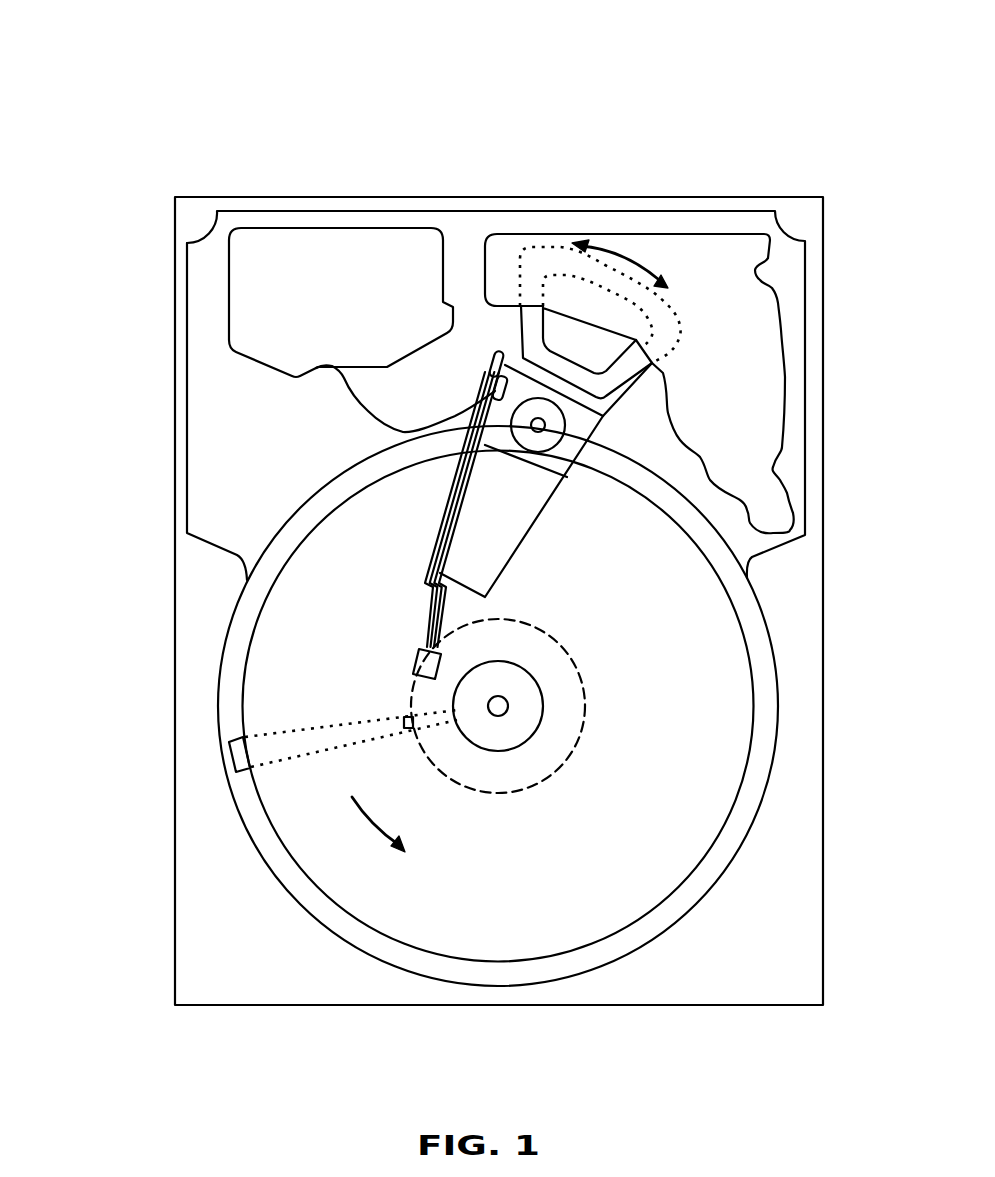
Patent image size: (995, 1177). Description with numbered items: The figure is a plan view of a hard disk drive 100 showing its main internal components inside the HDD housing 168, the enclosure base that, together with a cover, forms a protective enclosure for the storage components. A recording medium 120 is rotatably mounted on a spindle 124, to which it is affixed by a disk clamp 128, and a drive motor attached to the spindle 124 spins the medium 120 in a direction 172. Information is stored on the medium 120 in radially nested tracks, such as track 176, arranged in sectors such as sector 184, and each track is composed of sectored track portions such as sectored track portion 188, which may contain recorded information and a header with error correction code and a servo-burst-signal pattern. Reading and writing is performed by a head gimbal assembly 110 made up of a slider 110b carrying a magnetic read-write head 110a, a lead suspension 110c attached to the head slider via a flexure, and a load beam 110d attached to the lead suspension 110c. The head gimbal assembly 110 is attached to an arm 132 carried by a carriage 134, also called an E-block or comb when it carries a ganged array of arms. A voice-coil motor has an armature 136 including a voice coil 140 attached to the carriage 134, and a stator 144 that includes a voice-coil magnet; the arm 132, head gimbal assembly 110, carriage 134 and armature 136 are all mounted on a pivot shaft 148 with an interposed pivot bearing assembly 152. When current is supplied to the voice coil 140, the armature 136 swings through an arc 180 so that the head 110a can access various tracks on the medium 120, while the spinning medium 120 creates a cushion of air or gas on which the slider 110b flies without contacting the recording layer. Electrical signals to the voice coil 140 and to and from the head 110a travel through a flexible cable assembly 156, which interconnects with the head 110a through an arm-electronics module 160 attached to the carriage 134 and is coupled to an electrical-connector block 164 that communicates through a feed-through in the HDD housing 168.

The hard disk drive 100 is at (105, 80).
The head gimbal assembly 110 is at (268, 525).
The magnetic read-write head 110a is at (412, 670).
The slider 110b is at (427, 647).
The lead suspension 110c is at (437, 610).
The load beam 110d is at (427, 582).
The recording medium 120 is at (682, 660).
The spindle 124 is at (509, 707).
The disk clamp 128 is at (523, 723).
The arm 132 is at (490, 542).
The carriage 134 is at (557, 457).
The armature 136 is at (515, 340).
The voice coil 140 is at (533, 313).
The stator 144 is at (750, 327).
The pivot shaft 148 is at (546, 426).
The pivot bearing assembly 152 is at (552, 438).
The flexible cable assembly 156 is at (353, 402).
The arm-electronics module 160 is at (487, 390).
The electrical-connector block 164 is at (255, 302).
The HDD housing 168 is at (803, 212).
The direction 172 is at (386, 830).
The track 176 is at (575, 667).
The arc 180 is at (620, 255).
The sector 184 is at (227, 755).
The sectored track portion 188 is at (400, 720).